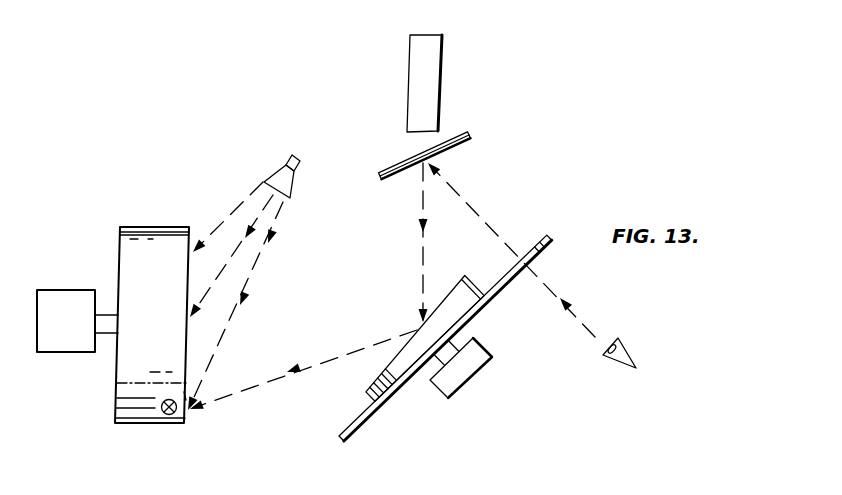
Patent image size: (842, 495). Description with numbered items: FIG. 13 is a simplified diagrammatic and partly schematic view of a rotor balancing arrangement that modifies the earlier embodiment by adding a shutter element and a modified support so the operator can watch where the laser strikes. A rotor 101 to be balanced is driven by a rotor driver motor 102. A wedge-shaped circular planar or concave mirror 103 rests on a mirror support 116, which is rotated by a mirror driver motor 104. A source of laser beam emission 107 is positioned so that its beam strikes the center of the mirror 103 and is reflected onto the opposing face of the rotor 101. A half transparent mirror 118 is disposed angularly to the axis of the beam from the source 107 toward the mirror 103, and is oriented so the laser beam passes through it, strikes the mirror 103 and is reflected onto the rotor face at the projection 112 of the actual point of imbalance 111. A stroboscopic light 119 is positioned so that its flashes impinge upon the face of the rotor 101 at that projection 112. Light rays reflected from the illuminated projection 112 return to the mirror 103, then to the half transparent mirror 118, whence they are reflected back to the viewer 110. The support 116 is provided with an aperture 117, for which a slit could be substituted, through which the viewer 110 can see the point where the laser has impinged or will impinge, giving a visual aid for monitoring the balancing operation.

The rotor 101 is at (153, 232).
The rotor driver motor 102 is at (58, 298).
The wedge-shaped mirror 103 is at (480, 243).
The mirror driver motor 104 is at (443, 392).
The source of laser beam emission 107 is at (423, 97).
The viewer 110 is at (615, 362).
The point of imbalance 111 is at (170, 415).
The projection of the point of imbalance 112 is at (188, 398).
The mirror support 116 is at (360, 415).
The aperture 117 is at (528, 242).
The half transparent mirror 118 is at (472, 134).
The stroboscopic light 119 is at (291, 155).